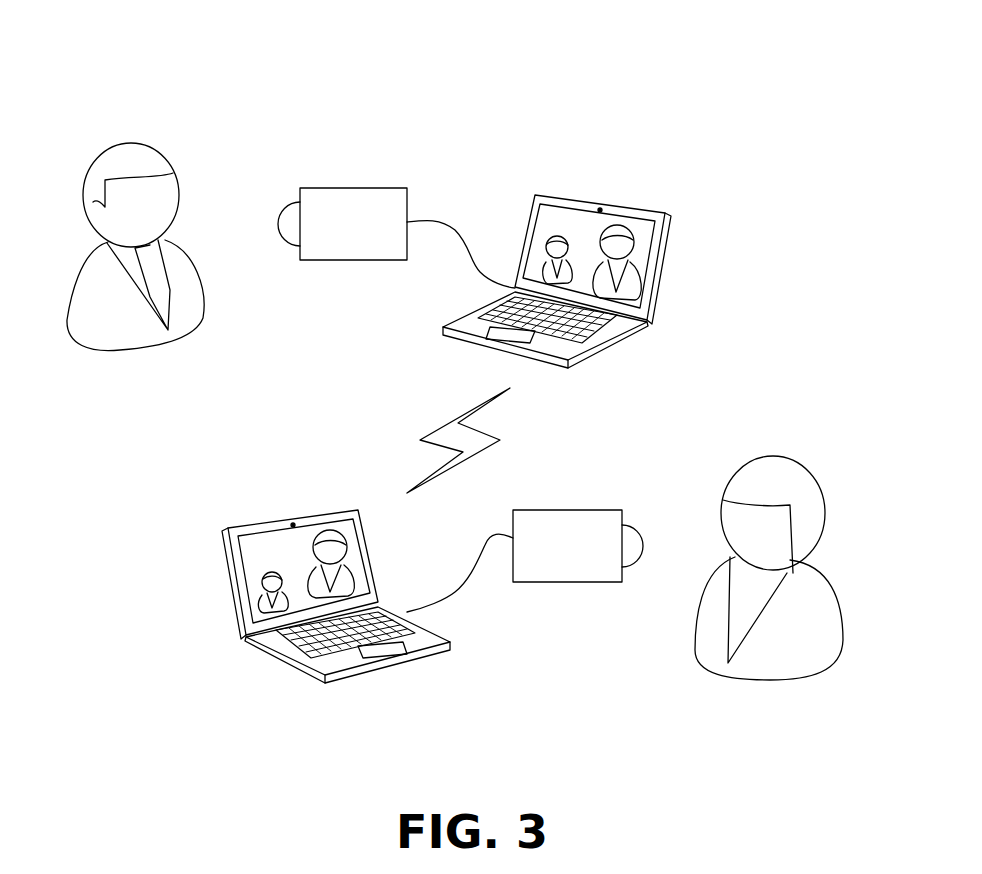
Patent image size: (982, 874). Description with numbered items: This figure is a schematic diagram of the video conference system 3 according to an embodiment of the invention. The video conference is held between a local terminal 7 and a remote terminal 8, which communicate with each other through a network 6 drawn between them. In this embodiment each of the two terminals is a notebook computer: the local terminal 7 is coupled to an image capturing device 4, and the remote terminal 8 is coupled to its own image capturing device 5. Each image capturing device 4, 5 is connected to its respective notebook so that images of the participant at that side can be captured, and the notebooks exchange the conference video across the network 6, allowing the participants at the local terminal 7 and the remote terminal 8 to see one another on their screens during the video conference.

The video conference system 3 is at (557, 97).
The image capturing device 4 is at (352, 188).
The image capturing device 5 is at (538, 582).
The network 6 is at (437, 427).
The local terminal 7 is at (658, 270).
The remote terminal 8 is at (235, 563).